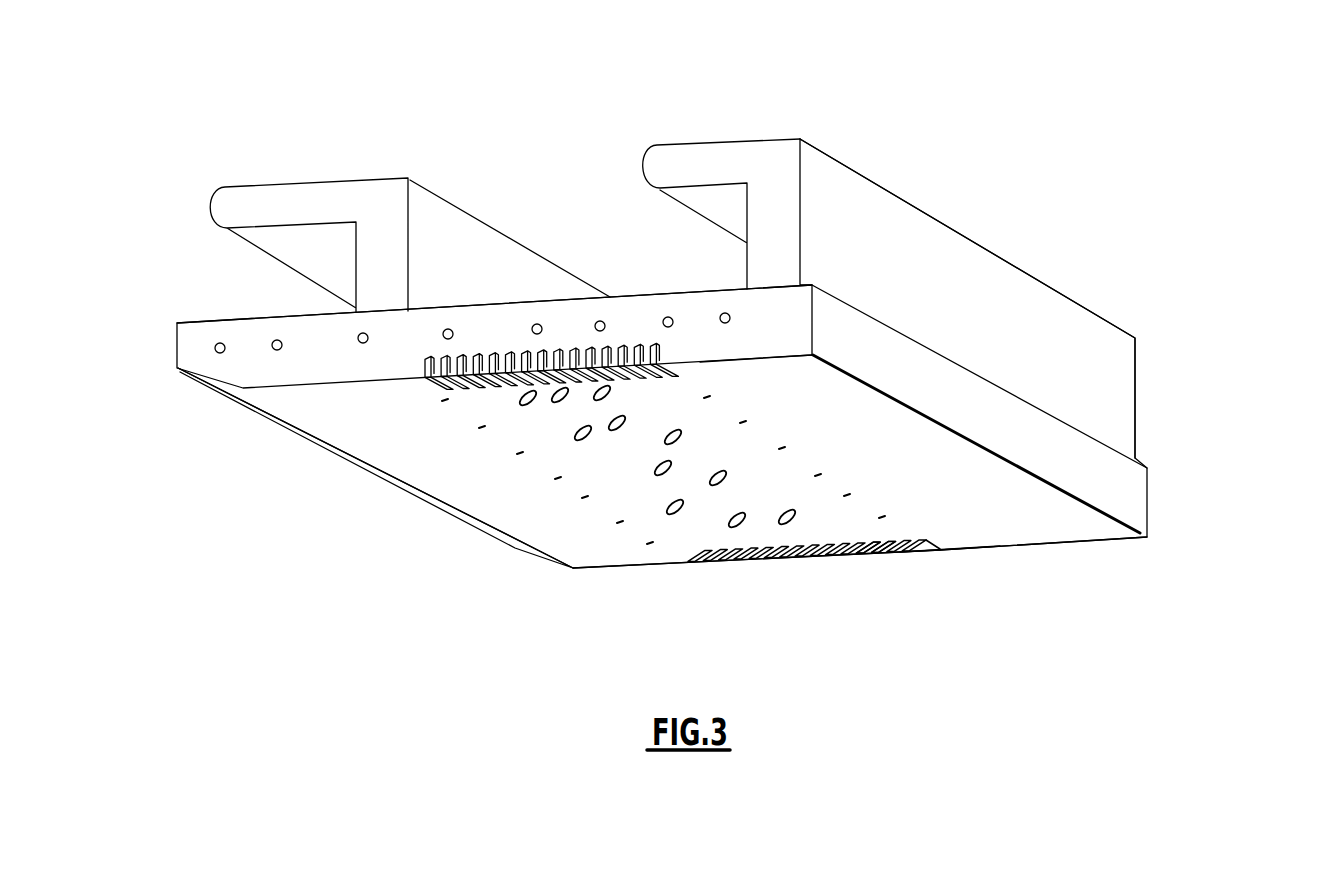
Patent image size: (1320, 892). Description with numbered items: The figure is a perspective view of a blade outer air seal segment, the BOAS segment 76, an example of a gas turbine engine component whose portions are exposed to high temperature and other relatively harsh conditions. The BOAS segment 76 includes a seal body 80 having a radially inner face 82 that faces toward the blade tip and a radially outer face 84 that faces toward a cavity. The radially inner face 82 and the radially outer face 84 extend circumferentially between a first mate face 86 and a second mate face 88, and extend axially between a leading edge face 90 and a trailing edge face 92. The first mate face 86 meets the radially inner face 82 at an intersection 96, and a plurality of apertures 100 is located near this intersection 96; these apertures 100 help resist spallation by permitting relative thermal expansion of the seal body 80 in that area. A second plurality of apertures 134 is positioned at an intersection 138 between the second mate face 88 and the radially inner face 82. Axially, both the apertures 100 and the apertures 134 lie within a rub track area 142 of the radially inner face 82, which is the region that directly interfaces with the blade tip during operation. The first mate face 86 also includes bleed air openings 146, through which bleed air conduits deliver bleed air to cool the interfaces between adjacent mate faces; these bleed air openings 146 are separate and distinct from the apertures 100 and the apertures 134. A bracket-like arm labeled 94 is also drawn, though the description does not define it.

The BOAS segment 76 is at (857, 579).
The seal body 80 is at (1182, 497).
The radially inner face 82 is at (600, 545).
The radially outer face 84 is at (372, 148).
The first mate face 86 is at (507, 323).
The second mate face 88 is at (950, 552).
The leading edge face 90 is at (177, 340).
The trailing edge face 92 is at (939, 386).
The bracket arm 94 is at (660, 167).
The intersection 96 is at (748, 348).
The apertures 100 is at (677, 353).
The second plurality of apertures 134 is at (780, 576).
The intersection 138 is at (992, 549).
The rub track area 142 is at (713, 490).
The bleed air openings 146 is at (277, 345).